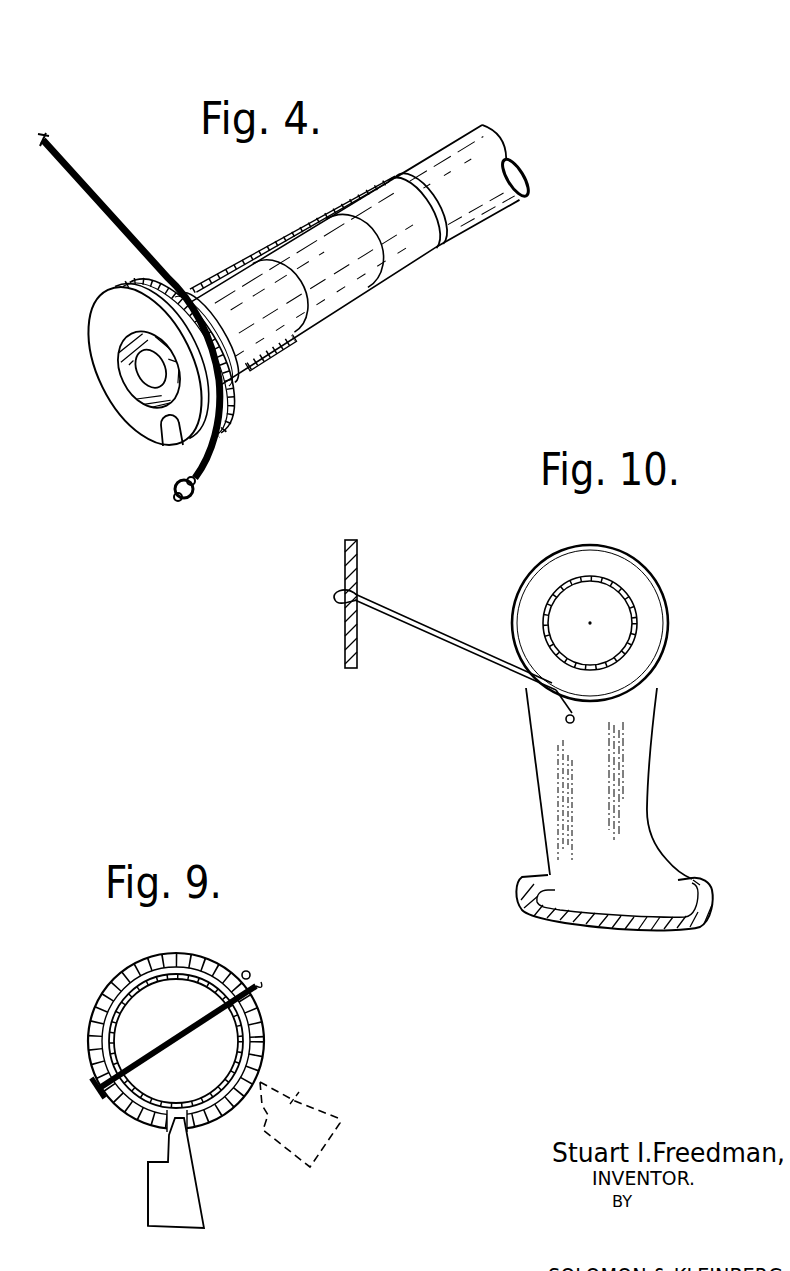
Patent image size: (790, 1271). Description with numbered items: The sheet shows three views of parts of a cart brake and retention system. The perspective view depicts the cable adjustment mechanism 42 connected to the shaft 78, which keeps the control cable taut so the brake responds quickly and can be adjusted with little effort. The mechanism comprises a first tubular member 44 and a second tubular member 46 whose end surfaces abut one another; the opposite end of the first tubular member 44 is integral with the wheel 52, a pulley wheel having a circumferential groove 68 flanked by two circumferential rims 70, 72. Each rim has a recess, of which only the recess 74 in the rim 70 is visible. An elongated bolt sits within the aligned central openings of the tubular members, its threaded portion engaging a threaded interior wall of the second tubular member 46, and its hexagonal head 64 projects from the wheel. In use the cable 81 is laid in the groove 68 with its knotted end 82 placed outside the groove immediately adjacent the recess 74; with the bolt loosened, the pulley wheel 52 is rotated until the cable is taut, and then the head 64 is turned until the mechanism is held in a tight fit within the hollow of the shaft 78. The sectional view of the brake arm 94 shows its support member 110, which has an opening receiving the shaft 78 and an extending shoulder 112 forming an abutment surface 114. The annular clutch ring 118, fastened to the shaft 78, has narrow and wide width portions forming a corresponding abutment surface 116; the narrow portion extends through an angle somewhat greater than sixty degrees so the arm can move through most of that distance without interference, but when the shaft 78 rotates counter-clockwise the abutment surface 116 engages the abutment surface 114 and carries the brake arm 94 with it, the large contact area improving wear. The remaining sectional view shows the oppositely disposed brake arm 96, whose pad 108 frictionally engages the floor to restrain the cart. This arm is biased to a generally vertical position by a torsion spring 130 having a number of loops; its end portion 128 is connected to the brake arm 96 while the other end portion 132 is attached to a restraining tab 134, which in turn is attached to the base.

In FIG. 4, the cable adjustment mechanism 42 is at (98, 394).
In FIG. 4, the first tubular member 44 is at (253, 270).
In FIG. 4, the second tubular member 46 is at (326, 228).
In FIG. 4, the wheel 52 is at (96, 332).
In FIG. 4, the hexagonal head 64 is at (150, 378).
In FIG. 4, the circumferential groove 68 is at (137, 281).
In FIG. 4, the circumferential rim 70 is at (228, 402).
In FIG. 4, the circumferential rim 72 is at (122, 413).
In FIG. 4, the recess 74 is at (163, 445).
In FIG. 4, the shaft 78 is at (481, 127).
In FIG. 10, the shaft 78 is at (633, 643).
In FIG. 9, the shaft 78 is at (196, 977).
In FIG. 4, the cable 81 is at (143, 247).
In FIG. 4, the knotted end 82 is at (194, 497).
In FIG. 9, the brake arm 94 is at (208, 1134).
In FIG. 10, the brake arm 96 is at (637, 817).
In FIG. 10, the pad 108 is at (626, 921).
In FIG. 9, the support member 110 is at (160, 1186).
In FIG. 9, the shoulder 112 is at (181, 1152).
In FIG. 9, the abutment surface 114 is at (167, 1142).
In FIG. 9, the abutment surface 116 is at (178, 1114).
In FIG. 9, the clutch ring 118 is at (95, 1022).
In FIG. 10, the end portion 128 is at (563, 724).
In FIG. 10, the torsion spring 130 is at (676, 584).
In FIG. 10, the end portion 132 is at (410, 610).
In FIG. 10, the restraining tab 134 is at (345, 652).